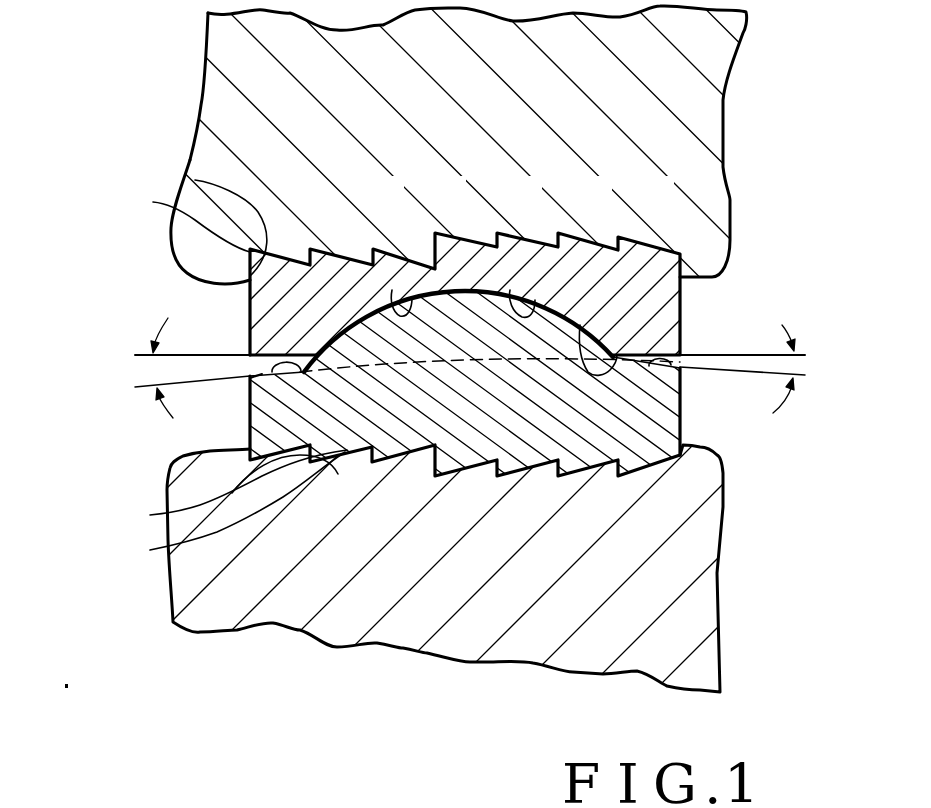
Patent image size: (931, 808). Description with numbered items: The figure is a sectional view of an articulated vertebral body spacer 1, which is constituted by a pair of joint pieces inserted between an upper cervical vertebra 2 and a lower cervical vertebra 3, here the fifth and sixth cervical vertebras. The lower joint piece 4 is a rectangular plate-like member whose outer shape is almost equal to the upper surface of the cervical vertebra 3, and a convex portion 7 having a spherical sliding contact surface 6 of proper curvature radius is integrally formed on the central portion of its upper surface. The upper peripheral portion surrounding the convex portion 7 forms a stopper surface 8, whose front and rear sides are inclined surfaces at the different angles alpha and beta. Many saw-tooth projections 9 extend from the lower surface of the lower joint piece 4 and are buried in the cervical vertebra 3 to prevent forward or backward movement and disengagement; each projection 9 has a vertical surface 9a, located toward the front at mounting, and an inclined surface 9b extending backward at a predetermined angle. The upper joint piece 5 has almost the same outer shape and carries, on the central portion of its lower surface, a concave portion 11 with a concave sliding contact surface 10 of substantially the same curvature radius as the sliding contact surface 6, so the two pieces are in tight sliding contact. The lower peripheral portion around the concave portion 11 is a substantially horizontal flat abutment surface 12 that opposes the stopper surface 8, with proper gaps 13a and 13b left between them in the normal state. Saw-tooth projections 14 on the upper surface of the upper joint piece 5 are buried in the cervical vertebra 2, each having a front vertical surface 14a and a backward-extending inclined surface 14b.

The articulated vertebral body spacer 1 is at (465, 404).
The cervical vertebra 2 is at (663, 122).
The cervical vertebra 3 is at (667, 588).
The lower joint piece 4 is at (705, 428).
The upper joint piece 5 is at (697, 312).
The sliding contact surface 6 is at (340, 318).
The convex portion 7 is at (467, 313).
The stopper surface 8 is at (287, 374).
The saw-tooth projections 9 is at (207, 515).
The vertical surface 9a is at (227, 492).
The inclined surface 9b is at (103, 503).
The concave sliding contact surface 10 is at (392, 290).
The concave portion 11 is at (510, 290).
The abutment surface 12 is at (580, 325).
The gap 13a is at (252, 408).
The gap 13b is at (633, 353).
The saw-tooth projections 14 is at (163, 206).
The vertical surface 14a is at (180, 214).
The inclined surface 14b is at (195, 180).